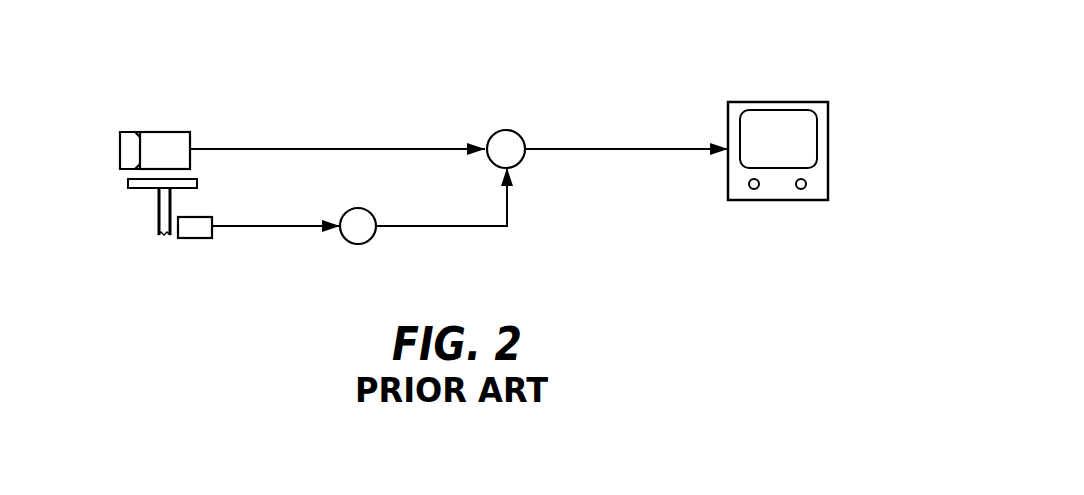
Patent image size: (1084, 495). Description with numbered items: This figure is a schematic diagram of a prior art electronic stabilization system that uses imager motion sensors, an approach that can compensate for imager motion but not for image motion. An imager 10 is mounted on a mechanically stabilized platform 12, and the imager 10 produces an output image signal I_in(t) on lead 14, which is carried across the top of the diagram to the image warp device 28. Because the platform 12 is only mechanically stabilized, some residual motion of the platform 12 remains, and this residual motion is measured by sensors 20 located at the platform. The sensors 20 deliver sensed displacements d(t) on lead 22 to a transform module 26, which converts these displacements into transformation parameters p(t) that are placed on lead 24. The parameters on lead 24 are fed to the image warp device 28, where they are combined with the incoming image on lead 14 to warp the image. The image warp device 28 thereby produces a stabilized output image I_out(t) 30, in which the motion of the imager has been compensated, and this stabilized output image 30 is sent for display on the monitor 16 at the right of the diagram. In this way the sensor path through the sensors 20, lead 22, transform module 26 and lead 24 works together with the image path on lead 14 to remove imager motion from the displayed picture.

The imager 10 is at (150, 132).
The mechanically stabilized platform 12 is at (157, 217).
The lead 14 is at (314, 149).
The monitor 16 is at (828, 183).
The sensors 20 is at (197, 238).
The lead 22 is at (277, 227).
The lead 24 is at (457, 226).
The transform module 26 is at (362, 244).
The image warp device 28 is at (511, 131).
The stabilized output image 30 is at (605, 148).